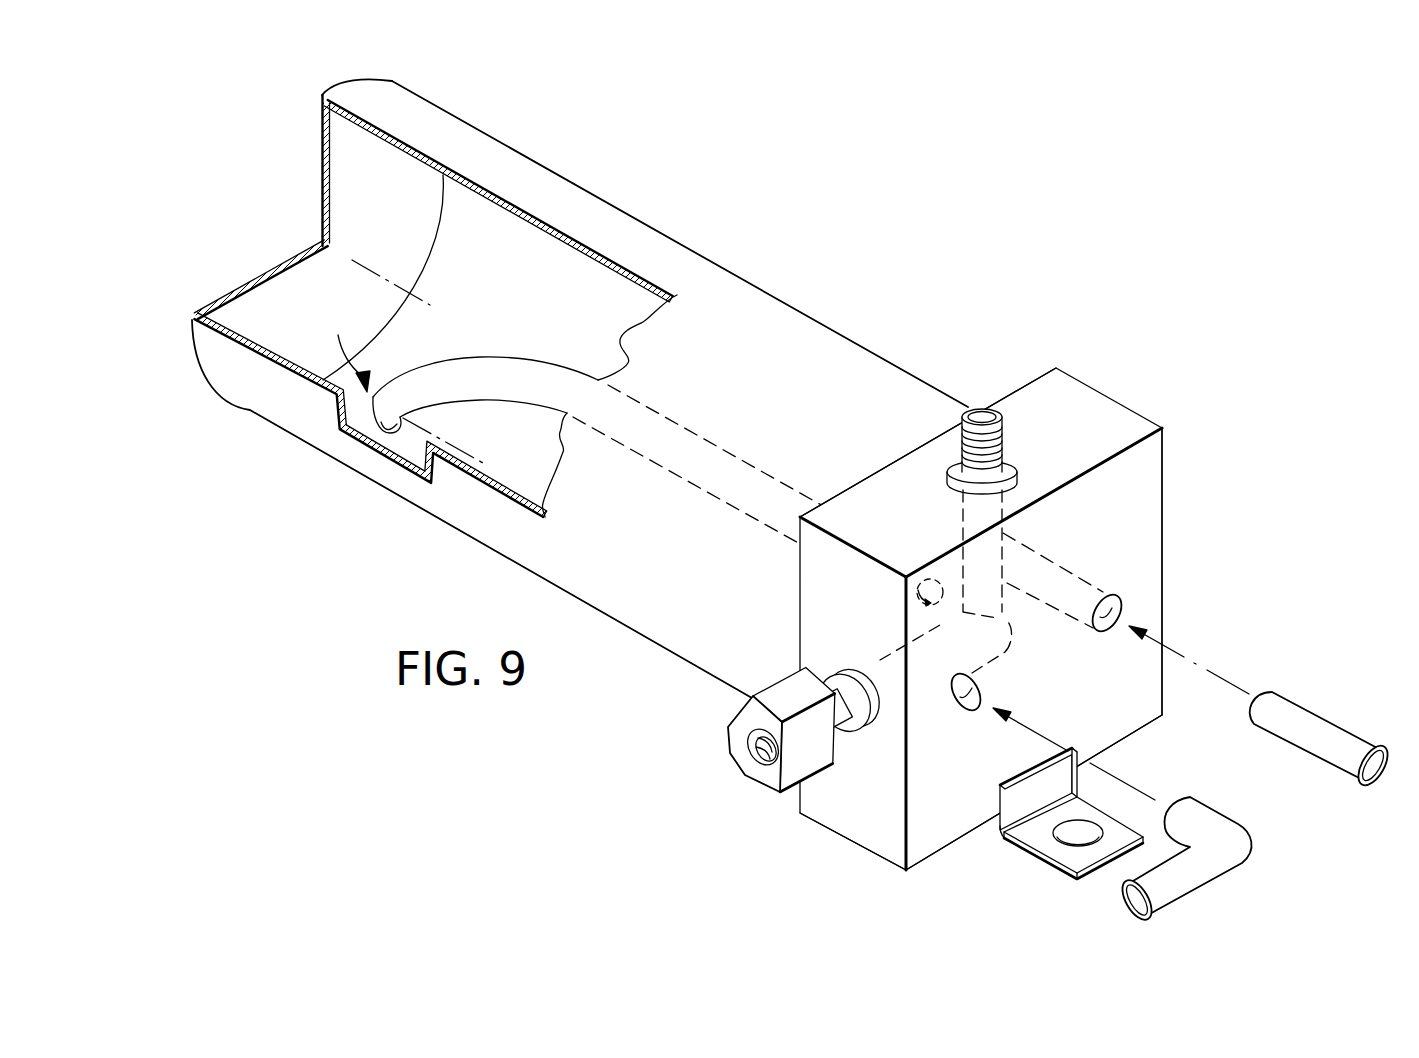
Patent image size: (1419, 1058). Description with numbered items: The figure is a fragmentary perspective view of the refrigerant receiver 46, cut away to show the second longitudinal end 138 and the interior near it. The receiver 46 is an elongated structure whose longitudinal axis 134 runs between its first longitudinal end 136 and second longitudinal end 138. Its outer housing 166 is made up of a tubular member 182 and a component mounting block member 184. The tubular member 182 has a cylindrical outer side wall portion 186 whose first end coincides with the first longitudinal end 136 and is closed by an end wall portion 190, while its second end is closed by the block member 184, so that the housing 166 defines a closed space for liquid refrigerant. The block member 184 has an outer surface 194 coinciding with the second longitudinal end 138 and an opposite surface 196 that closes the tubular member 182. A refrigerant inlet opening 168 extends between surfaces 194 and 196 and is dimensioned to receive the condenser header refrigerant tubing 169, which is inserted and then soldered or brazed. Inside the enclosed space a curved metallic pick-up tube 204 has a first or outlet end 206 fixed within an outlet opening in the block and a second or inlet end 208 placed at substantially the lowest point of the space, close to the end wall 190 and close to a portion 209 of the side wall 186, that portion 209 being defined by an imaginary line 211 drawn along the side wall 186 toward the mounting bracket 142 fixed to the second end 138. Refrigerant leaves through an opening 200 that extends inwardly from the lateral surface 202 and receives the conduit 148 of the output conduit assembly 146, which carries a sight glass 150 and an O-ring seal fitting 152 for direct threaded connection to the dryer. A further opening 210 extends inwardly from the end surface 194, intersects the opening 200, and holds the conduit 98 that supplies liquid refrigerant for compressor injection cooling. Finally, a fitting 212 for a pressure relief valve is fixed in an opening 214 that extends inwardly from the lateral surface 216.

The refrigerant receiver 46 is at (1238, 523).
The conduit 98 is at (1217, 820).
The longitudinal axis 134 is at (378, 277).
The first longitudinal end 136 is at (221, 307).
The second longitudinal end 138 is at (1153, 462).
The mounting bracket 142 is at (1030, 855).
The output conduit assembly 146 is at (775, 787).
The conduit 148 is at (860, 718).
The sight glass 150 is at (840, 682).
The O-ring seal fitting 152 is at (732, 748).
The outer housing 166 is at (767, 300).
The refrigerant inlet opening 168 is at (1120, 601).
The refrigerant tubing 169 is at (1309, 725).
The tubular member 182 is at (870, 348).
The component mounting block member 184 is at (1095, 393).
The cylindrical outer side wall portion 186 is at (290, 414).
The end wall portion 190 is at (298, 255).
The outer surface 194 is at (1077, 510).
The opposite surface 196 is at (877, 473).
The opening 200 is at (997, 651).
The lateral surface 202 is at (873, 830).
The pick-up tube 204 is at (494, 356).
The first end 206 is at (895, 620).
The second end 208 is at (400, 408).
The portion of side wall 209 is at (347, 352).
The opening 210 is at (972, 712).
The imaginary line 211 is at (462, 448).
The fitting 212 is at (980, 412).
The opening 214 is at (960, 531).
The lateral surface 216 is at (1124, 408).